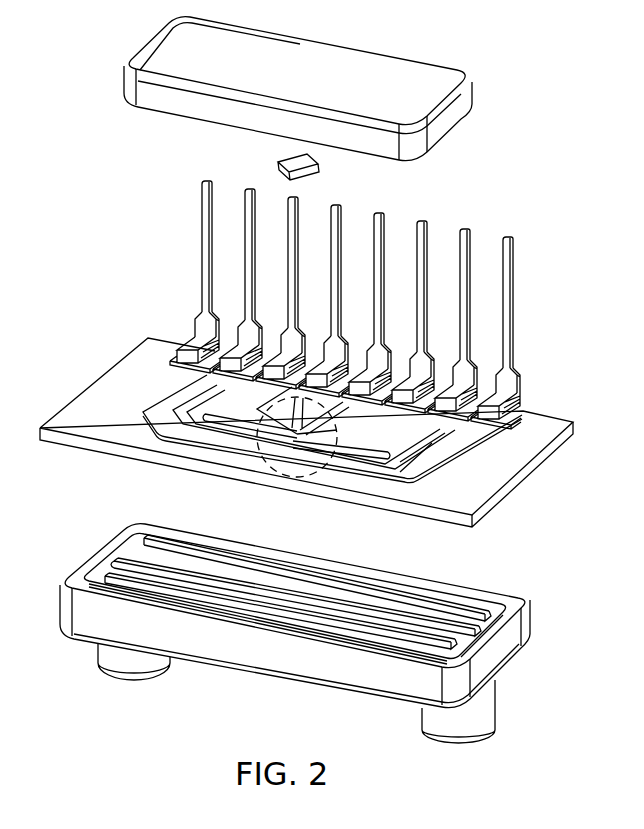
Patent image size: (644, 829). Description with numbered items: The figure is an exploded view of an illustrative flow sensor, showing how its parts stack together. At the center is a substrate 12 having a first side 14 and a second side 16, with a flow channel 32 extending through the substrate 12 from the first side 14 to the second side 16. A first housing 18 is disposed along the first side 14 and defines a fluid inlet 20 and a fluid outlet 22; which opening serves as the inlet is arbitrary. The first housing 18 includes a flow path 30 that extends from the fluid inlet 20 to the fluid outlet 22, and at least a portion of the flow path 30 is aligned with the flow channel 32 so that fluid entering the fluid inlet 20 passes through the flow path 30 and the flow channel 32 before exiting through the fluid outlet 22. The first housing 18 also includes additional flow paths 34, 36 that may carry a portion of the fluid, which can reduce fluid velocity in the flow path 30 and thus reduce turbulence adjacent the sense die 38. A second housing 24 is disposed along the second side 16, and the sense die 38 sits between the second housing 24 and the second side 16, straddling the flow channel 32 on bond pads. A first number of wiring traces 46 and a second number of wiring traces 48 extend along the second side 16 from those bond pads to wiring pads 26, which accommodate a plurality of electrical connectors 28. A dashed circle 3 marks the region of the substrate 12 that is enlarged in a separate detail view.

The substrate 12 is at (336, 444).
The first side 14 is at (509, 497).
The second side 16 is at (542, 437).
The first housing 18 is at (306, 625).
The fluid inlet 20 is at (105, 660).
The fluid outlet 22 is at (487, 712).
The second housing 24 is at (166, 50).
The wiring pads 26 is at (324, 471).
The electrical connectors 28 is at (377, 305).
The detail circle region 3 is at (272, 478).
The flow path 30 is at (398, 612).
The flow channel 32 is at (215, 418).
The additional flow path 34 is at (240, 560).
The additional flow path 36 is at (160, 585).
The sense die 38 is at (283, 161).
The first number of wiring traces 46 is at (462, 400).
The second number of wiring traces 48 is at (428, 441).